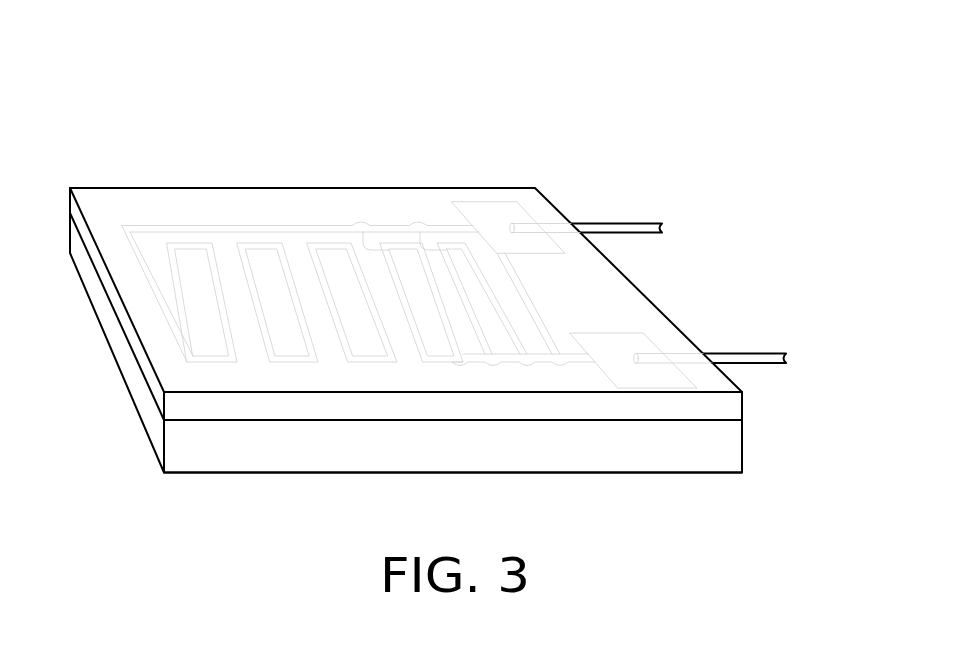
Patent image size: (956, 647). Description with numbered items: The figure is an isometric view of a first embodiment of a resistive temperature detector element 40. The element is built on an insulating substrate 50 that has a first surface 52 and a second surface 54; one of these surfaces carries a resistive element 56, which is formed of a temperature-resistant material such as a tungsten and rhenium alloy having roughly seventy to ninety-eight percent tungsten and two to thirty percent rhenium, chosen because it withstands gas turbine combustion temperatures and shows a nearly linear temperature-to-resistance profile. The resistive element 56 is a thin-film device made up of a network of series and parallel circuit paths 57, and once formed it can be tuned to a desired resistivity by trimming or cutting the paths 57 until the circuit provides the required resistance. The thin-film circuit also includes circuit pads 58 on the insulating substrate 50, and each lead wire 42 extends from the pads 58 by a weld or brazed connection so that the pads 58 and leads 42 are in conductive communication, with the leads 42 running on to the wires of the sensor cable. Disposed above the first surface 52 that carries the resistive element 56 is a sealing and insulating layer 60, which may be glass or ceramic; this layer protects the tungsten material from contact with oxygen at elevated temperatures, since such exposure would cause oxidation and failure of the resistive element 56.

The resistive temperature detector element 40 is at (138, 88).
The lead wire 42 is at (618, 227).
The insulating substrate 50 is at (253, 448).
The first surface 52 is at (558, 419).
The second surface 54 is at (348, 473).
The resistive element 56 is at (317, 218).
The circuit paths 57 is at (217, 255).
The circuit pads 58 is at (485, 218).
The sealing and insulating layer 60 is at (168, 187).